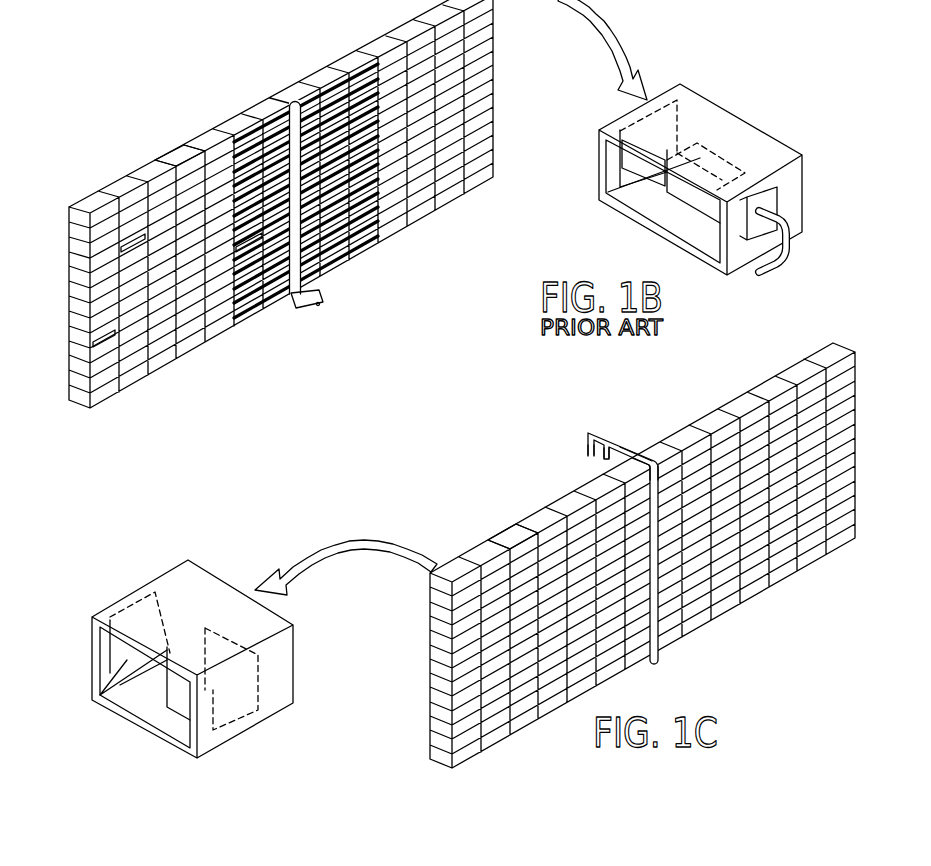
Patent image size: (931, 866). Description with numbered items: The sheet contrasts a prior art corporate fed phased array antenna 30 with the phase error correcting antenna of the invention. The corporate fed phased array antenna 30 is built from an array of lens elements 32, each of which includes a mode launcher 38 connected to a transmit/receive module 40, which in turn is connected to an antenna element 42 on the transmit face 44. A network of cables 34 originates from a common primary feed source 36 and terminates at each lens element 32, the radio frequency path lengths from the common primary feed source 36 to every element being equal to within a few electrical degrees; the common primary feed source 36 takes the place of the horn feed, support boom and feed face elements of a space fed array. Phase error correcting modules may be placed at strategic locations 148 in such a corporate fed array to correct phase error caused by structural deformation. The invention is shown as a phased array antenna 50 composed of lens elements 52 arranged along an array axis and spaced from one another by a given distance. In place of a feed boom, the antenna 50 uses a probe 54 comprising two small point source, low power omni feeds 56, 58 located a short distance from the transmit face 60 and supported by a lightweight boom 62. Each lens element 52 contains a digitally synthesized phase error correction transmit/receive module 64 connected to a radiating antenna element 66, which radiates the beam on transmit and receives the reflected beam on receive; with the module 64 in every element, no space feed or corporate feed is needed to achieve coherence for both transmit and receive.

In FIG. 1B, the corporate fed phased array antenna 30 is at (250, 93).
In FIG. 1B, the transmit face 44 is at (174, 150).
In FIG. 1B, the locations 148 is at (133, 242).
In FIG. 1B, the common primary feed source 36 is at (321, 297).
In FIG. 1B, the lens element 32 is at (725, 108).
In FIG. 1B, the antenna element 42 is at (625, 172).
In FIG. 1B, the transmit/receive module 40 is at (687, 200).
In FIG. 1B, the mode launcher 38 is at (772, 202).
In FIG. 1B, the cables 34 is at (790, 248).
In FIG. 1C, the phased array antenna 50 is at (689, 414).
In FIG. 1C, the probe 54 is at (590, 435).
In FIG. 1C, the lightweight boom 62 is at (608, 435).
In FIG. 1C, the omni feed 56 is at (591, 452).
In FIG. 1C, the omni feed 58 is at (606, 462).
In FIG. 1C, the transmit face 60 is at (505, 528).
In FIG. 1C, the lens element 52 is at (203, 568).
In FIG. 1C, the radiating antenna element 66 is at (104, 700).
In FIG. 1C, the digitally synthesized phase error correction transmit/receive module 64 is at (181, 700).